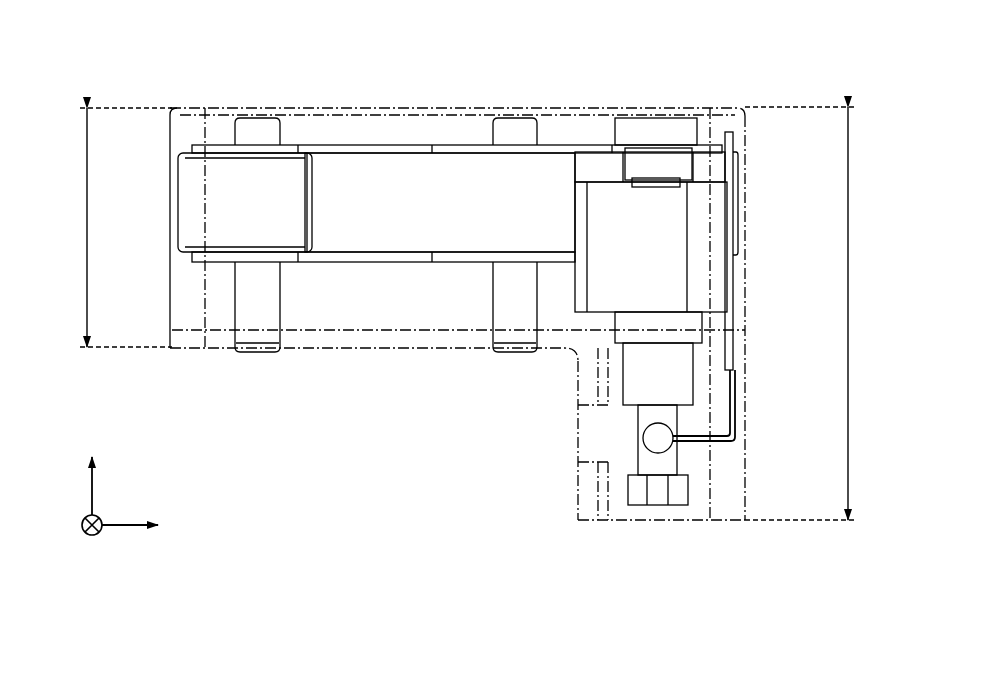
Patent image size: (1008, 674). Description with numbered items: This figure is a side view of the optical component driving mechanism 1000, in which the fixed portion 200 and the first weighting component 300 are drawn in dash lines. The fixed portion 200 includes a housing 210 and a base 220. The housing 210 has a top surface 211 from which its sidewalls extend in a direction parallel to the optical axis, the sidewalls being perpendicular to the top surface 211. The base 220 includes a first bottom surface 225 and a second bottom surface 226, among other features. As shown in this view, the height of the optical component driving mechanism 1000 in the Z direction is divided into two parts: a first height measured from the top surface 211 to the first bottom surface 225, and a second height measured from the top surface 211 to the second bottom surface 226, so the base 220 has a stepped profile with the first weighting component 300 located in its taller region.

The optical component driving mechanism 1000 is at (105, 42).
The fixed portion 200 is at (812, 2).
The housing 210 is at (323, 116).
The top surface 211 is at (455, 106).
The base 220 is at (333, 352).
The second bottom surface 226 is at (387, 348).
The first bottom surface 225 is at (588, 522).
The first weighting component 300 is at (728, 508).